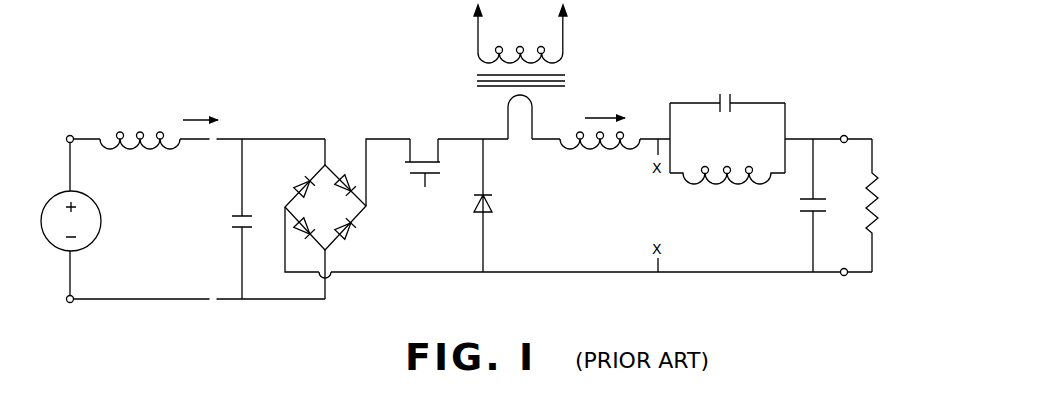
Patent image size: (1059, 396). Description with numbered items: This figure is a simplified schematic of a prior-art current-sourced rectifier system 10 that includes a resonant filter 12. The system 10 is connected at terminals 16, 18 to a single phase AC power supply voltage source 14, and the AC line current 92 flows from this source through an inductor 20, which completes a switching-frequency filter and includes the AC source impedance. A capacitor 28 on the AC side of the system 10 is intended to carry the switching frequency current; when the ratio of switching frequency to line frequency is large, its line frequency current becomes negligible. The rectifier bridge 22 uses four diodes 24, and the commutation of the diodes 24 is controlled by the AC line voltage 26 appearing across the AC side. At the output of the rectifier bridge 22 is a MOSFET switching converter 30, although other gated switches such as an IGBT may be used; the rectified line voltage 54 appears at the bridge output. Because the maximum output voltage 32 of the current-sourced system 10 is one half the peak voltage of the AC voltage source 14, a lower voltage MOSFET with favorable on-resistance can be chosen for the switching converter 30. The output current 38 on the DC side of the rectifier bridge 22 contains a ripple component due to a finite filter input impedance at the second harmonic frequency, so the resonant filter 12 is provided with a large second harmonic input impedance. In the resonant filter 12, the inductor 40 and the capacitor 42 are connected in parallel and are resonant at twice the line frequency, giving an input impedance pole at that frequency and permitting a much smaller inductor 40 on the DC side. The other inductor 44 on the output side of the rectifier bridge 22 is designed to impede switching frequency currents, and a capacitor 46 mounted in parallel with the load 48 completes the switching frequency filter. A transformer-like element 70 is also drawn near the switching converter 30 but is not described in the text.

The current-sourced rectifier system 10 is at (310, 75).
The resonant filter 12 is at (825, 58).
The AC power supply voltage source 14 is at (97, 205).
The terminal 16 is at (70, 136).
The terminal 18 is at (72, 297).
The inductor 20 is at (133, 137).
The rectifier bridge 22 is at (319, 239).
The diodes 24 is at (341, 178).
The AC line voltage 26 is at (190, 228).
The capacitor 28 is at (253, 224).
The switching converter 30 is at (427, 142).
The output voltage 32 is at (530, 218).
The output current 38 is at (607, 95).
The inductor 40 is at (727, 190).
The capacitor 42 is at (733, 97).
The inductor 44 is at (605, 150).
The capacitor 46 is at (807, 214).
The load 48 is at (865, 210).
The rectified line voltage 54 is at (418, 222).
The transformer 70 is at (477, 36).
The AC line current 92 is at (208, 105).